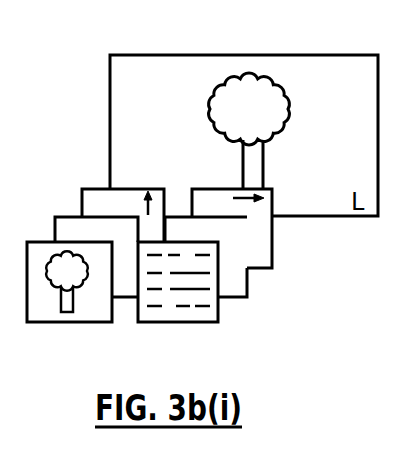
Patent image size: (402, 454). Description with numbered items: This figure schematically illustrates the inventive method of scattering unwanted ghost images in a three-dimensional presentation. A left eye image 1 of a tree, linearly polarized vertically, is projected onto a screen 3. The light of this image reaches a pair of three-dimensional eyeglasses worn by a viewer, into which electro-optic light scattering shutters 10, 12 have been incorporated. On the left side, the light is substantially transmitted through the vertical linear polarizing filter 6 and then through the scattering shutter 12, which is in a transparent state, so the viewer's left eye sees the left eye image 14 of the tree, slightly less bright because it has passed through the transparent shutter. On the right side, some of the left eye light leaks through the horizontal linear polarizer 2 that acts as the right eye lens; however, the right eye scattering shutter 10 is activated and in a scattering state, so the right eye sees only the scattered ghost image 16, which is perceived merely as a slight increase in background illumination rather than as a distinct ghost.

The left eye image 1 is at (262, 78).
The screen 3 is at (327, 55).
The vertical linear polarizing filter 6 is at (92, 189).
The scattering shutter 12 is at (62, 217).
The left eye image 14 is at (67, 312).
The scattered ghost image 16 is at (168, 313).
The horizontal linear polarizer 2 is at (263, 247).
The scattering shutter 10 is at (238, 285).